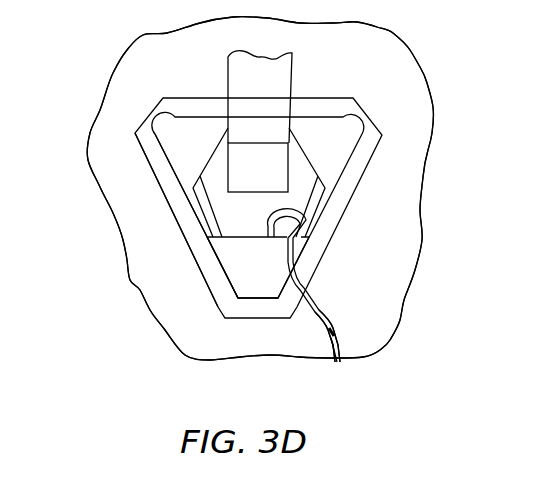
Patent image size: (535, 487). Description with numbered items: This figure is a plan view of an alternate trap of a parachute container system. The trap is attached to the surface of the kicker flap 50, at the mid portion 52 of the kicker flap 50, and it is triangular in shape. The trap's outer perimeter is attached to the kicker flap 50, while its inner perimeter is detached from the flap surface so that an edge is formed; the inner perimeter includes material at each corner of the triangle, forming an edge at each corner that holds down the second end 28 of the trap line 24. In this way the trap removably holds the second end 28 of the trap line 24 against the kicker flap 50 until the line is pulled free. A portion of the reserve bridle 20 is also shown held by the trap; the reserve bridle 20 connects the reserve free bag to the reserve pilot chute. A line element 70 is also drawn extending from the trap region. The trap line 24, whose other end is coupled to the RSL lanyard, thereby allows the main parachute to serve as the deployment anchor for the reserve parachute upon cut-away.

The mid portion 52 is at (135, 95).
The trap line 24 is at (383, 135).
The kicker flap 50 is at (404, 100).
The second end 28 is at (313, 223).
The reserve bridle 20 is at (275, 84).
The wire 70 is at (338, 364).